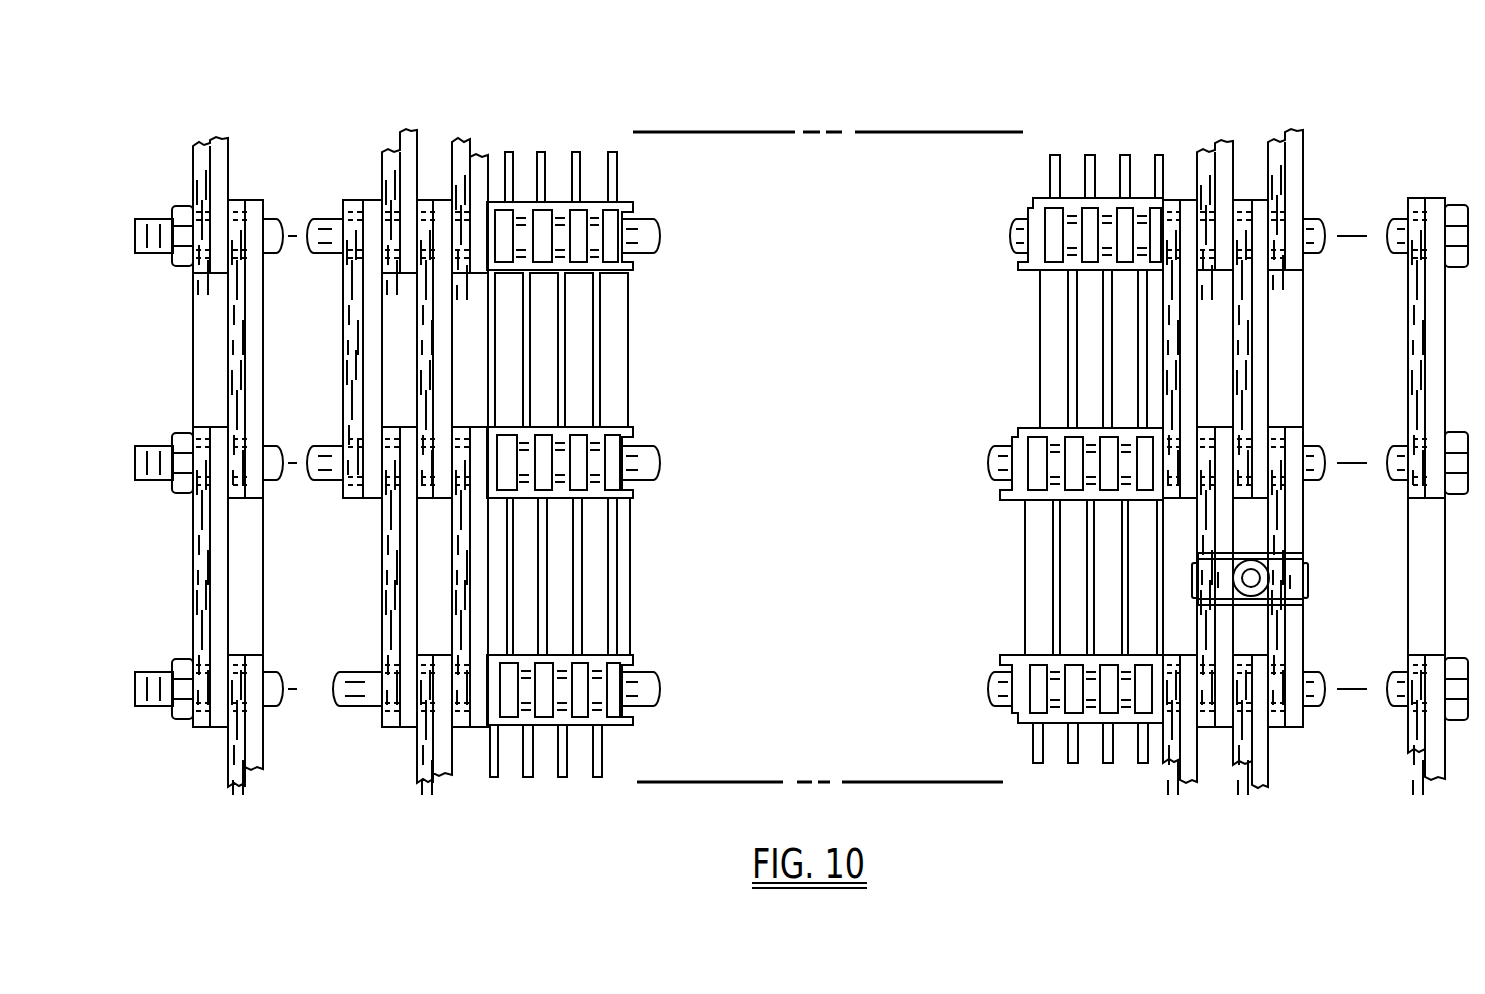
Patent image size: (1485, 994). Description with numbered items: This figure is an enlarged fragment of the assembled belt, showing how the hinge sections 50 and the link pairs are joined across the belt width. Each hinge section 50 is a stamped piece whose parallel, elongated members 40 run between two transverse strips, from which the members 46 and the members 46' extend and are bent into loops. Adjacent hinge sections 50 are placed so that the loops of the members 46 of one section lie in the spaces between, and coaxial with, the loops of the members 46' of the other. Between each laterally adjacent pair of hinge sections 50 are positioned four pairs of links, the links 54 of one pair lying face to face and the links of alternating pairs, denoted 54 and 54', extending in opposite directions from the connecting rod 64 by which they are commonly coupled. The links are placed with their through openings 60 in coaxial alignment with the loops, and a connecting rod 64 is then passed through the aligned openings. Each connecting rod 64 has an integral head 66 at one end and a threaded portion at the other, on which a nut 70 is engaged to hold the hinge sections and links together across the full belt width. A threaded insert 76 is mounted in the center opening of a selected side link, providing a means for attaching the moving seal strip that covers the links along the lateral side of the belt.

The elongated members 40 is at (545, 562).
The members 46 is at (825, 464).
The members 46' is at (587, 419).
The hinge section 50 is at (798, 466).
The link element 54 is at (772, 385).
The link 54' is at (836, 513).
The through openings 60 is at (637, 447).
The connecting rod 64 is at (1010, 225).
The head 66 is at (1455, 207).
The nut 70 is at (185, 267).
The threaded insert 76 is at (1295, 573).